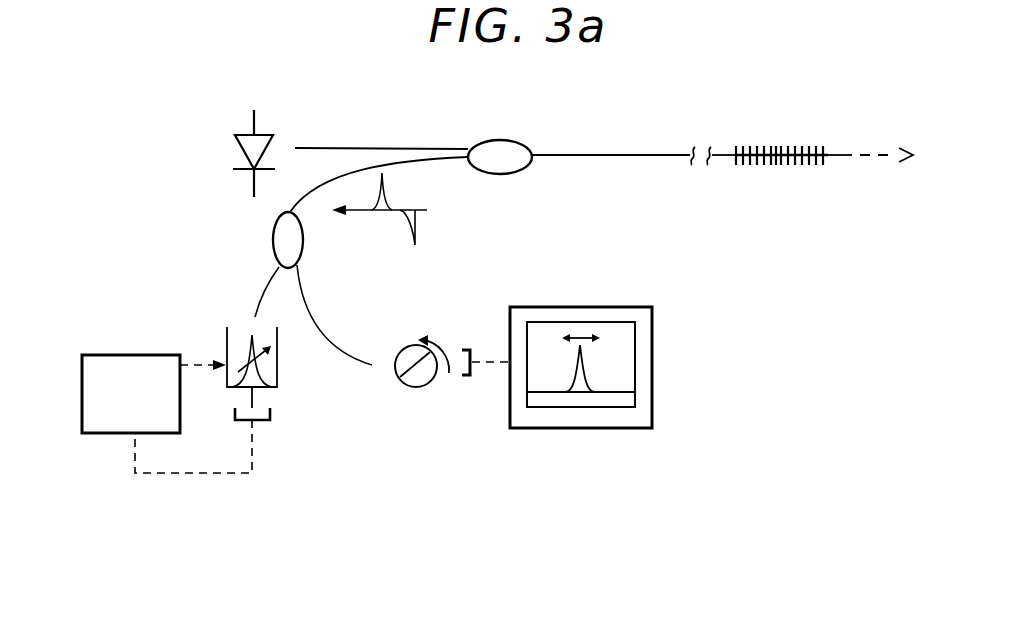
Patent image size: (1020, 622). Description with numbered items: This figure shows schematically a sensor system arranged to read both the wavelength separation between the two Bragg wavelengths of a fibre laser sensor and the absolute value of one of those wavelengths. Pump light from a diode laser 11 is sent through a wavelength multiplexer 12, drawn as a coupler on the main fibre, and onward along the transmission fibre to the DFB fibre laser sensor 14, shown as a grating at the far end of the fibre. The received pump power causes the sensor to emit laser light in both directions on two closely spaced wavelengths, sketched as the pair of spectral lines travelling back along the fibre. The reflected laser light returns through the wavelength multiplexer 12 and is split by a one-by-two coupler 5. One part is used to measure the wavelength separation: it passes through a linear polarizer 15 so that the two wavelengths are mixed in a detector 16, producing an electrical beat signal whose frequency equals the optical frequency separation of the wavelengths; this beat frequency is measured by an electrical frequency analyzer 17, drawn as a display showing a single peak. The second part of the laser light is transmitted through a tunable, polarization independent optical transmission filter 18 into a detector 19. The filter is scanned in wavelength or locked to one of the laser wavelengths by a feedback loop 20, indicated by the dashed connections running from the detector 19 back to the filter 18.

The 1×2 coupler 5 is at (273, 240).
The light source (laser diode) 11 is at (254, 136).
The wavelength multiplexer 12 is at (500, 140).
The DFB fibre laser sensor 14 is at (781, 136).
The linear polarizer 15 is at (422, 378).
The detector 16 is at (469, 381).
The electrical frequency analyzer 17 is at (581, 385).
The tunable optical filter 18 is at (242, 342).
The photodetector 19 is at (273, 407).
The control unit 20 is at (131, 394).